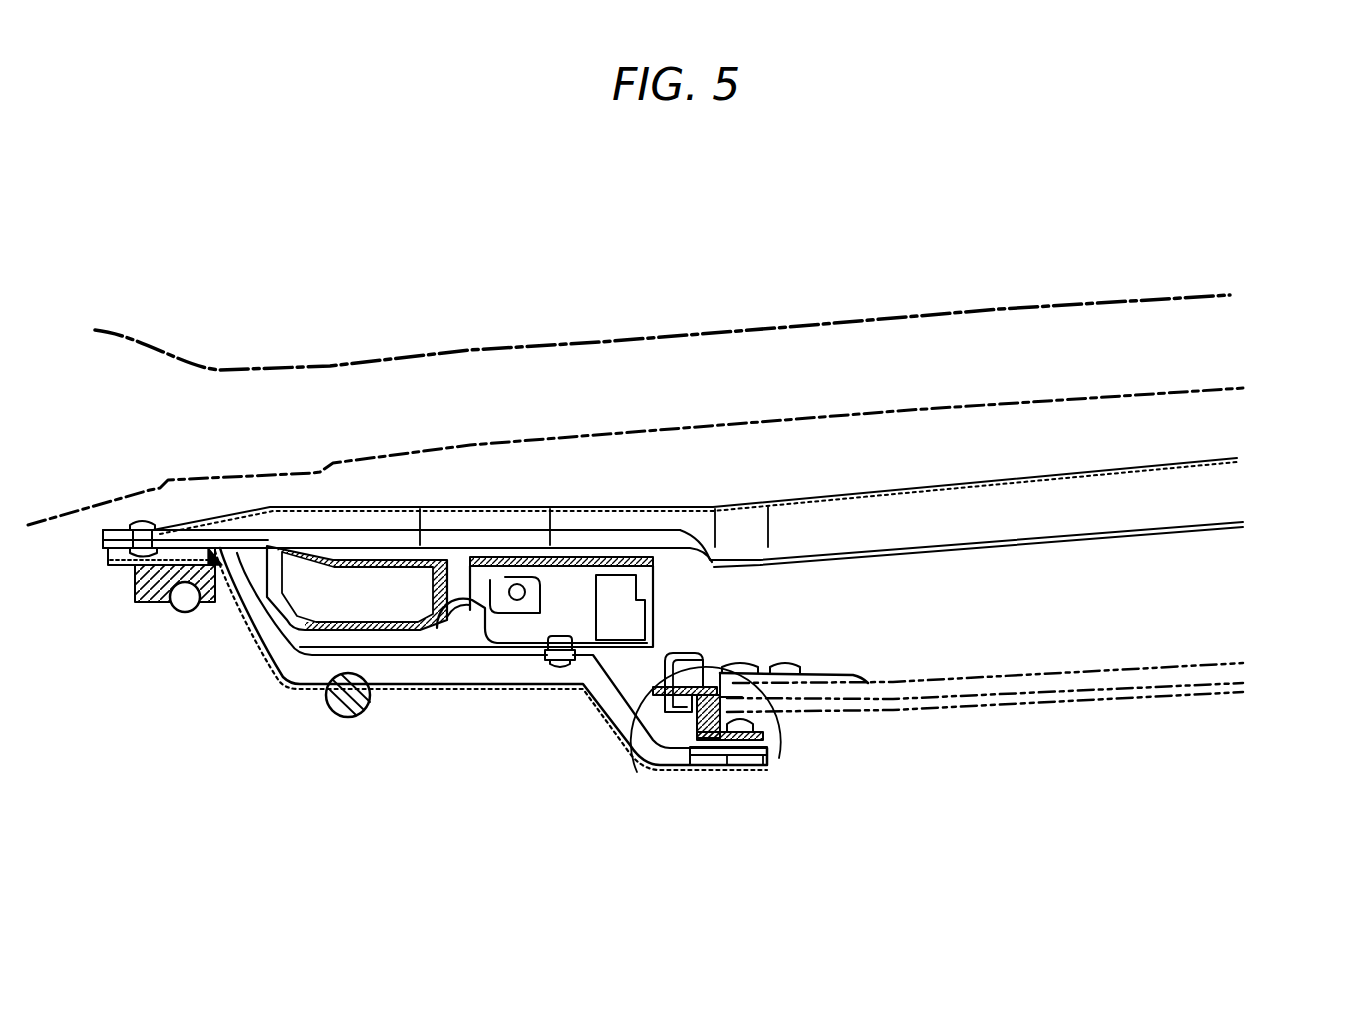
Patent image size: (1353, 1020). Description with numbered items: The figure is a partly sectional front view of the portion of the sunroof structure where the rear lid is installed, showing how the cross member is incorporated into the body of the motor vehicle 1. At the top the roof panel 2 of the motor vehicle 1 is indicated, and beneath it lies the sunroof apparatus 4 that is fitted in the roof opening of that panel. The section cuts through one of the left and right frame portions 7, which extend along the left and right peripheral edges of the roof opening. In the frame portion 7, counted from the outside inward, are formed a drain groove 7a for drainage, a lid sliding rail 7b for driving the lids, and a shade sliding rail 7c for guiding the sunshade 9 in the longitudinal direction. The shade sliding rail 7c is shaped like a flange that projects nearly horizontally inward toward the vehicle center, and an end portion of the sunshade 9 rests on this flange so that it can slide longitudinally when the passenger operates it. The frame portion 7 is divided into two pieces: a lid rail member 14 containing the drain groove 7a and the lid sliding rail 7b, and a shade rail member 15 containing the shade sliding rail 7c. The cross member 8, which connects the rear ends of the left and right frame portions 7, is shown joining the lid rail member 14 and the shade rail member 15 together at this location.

The motor vehicle 1 is at (671, 282).
The roof panel 2 is at (928, 316).
The sunroof apparatus 4 is at (1266, 444).
The frame portion 7 is at (485, 549).
The drain groove 7a is at (388, 630).
The lid sliding rail 7b is at (603, 648).
The shade sliding rail 7c is at (778, 758).
The cross member 8 is at (923, 533).
The sunshade 9 is at (1057, 707).
The lid rail member 14 is at (440, 645).
The shade rail member 15 is at (620, 743).